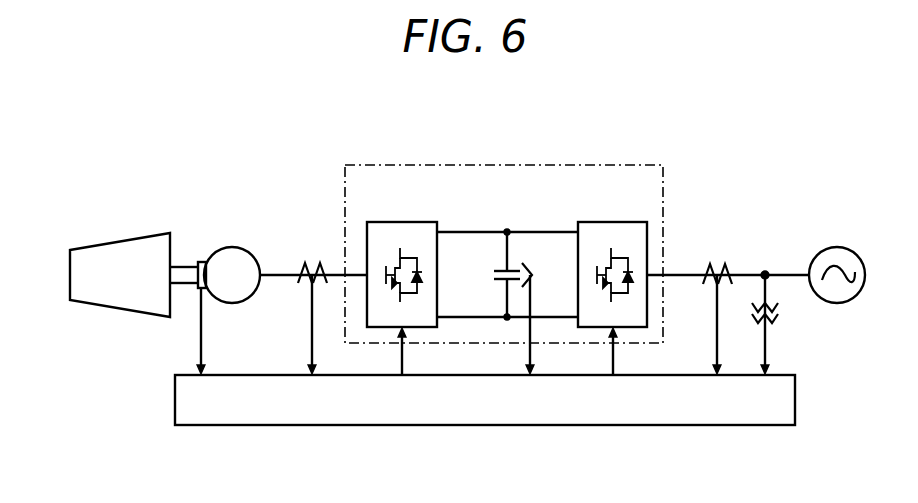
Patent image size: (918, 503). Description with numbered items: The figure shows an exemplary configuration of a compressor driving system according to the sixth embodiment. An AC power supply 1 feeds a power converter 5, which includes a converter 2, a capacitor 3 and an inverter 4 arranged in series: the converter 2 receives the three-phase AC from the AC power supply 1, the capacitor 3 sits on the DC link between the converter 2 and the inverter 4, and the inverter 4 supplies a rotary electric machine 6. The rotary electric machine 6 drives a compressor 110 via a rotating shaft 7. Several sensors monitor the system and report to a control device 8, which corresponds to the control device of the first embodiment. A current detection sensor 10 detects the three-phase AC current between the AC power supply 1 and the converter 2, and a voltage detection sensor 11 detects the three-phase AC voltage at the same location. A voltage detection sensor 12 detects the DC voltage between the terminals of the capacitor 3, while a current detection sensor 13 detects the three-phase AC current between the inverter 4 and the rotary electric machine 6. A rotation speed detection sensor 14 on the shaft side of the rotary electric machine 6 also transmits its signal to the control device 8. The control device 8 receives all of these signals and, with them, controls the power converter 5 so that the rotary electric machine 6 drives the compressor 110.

The AC power supply 1 is at (830, 245).
The converter 2 is at (693, 273).
The capacitor 3 is at (507, 274).
The inverter 4 is at (402, 273).
The power converter 5 is at (488, 251).
The rotary electric machine 6 is at (279, 247).
The rotating shaft 7 is at (184, 312).
The control device 8 is at (485, 433).
The current detection sensor 10 is at (708, 291).
The voltage detection sensor 11 is at (797, 322).
The voltage detection sensor 12 is at (544, 272).
The current detection sensor 13 is at (298, 288).
The rotation speed detection sensor 14 is at (183, 285).
The compressor 110 is at (120, 250).